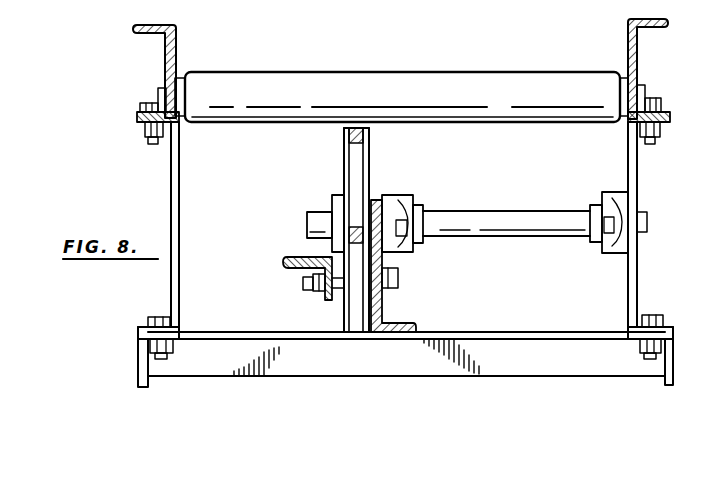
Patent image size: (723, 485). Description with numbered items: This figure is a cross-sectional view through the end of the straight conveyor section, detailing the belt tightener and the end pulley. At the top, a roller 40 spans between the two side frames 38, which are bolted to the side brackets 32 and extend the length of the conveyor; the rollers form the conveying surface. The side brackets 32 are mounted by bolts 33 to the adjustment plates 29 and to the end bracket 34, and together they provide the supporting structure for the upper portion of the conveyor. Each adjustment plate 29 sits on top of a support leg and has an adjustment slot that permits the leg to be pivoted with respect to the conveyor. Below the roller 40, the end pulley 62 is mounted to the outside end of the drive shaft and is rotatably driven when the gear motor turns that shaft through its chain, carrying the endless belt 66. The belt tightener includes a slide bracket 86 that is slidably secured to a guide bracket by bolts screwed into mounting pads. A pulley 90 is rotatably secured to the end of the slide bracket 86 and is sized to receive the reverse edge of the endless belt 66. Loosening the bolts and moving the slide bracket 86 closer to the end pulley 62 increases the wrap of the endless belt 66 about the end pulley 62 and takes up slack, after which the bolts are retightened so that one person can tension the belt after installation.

The adjustment plate 29 is at (137, 360).
The side bracket 32 is at (179, 224).
The bolt 33 is at (152, 316).
The end bracket 34 is at (465, 331).
The side frame 38 is at (177, 55).
The roller 40 is at (391, 72).
The end pulley 62 is at (352, 164).
The endless belt 66 is at (374, 129).
The slide bracket 86 is at (283, 261).
The pulley 90 is at (346, 304).